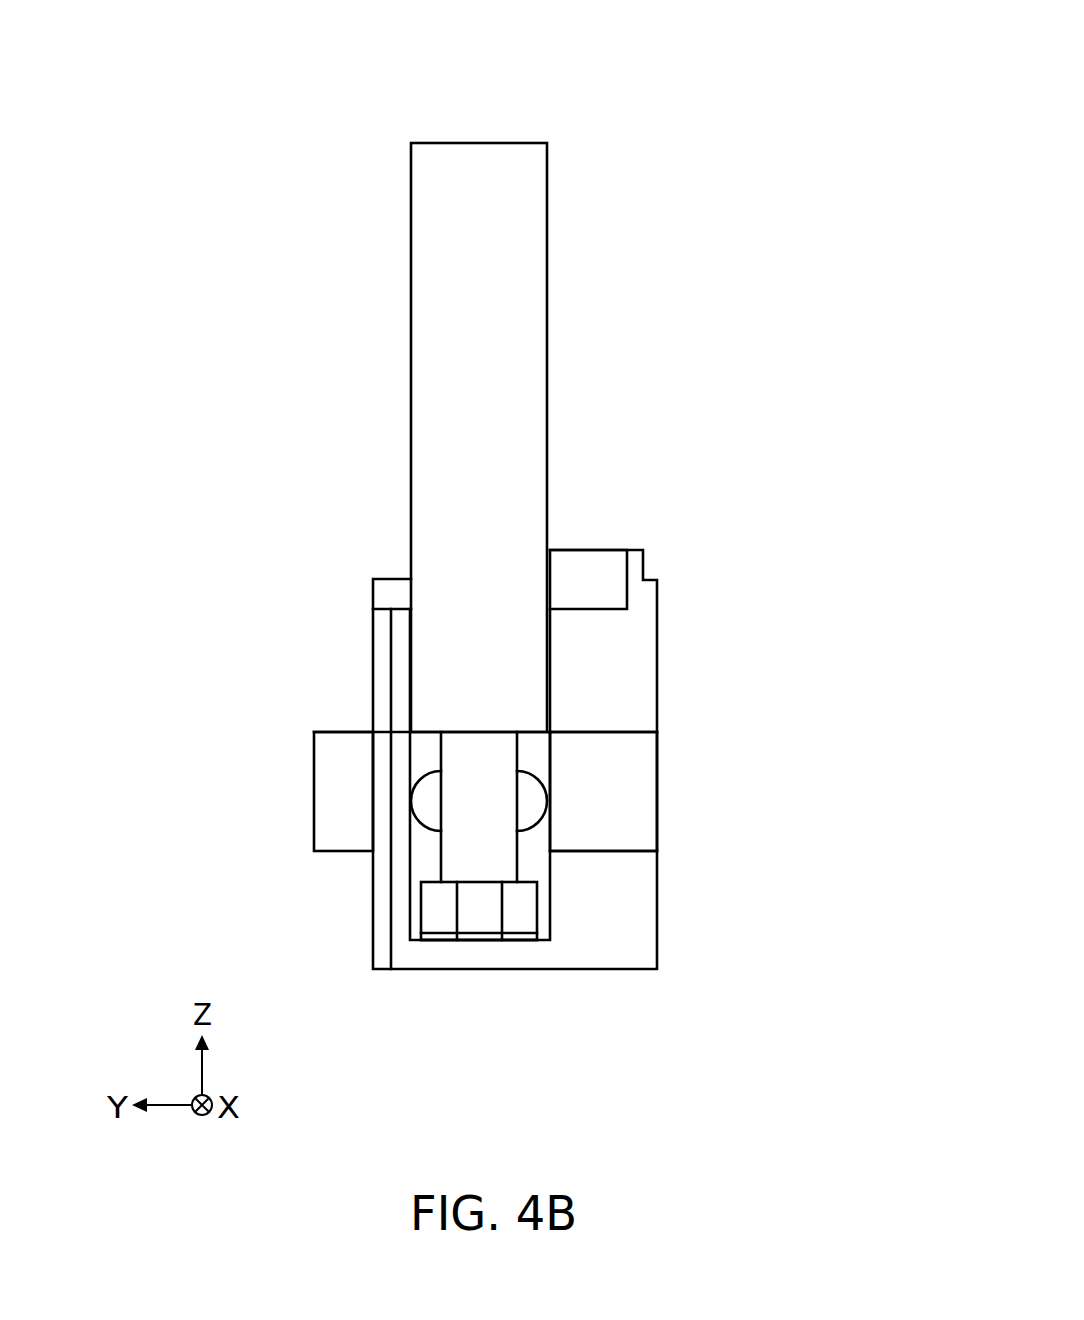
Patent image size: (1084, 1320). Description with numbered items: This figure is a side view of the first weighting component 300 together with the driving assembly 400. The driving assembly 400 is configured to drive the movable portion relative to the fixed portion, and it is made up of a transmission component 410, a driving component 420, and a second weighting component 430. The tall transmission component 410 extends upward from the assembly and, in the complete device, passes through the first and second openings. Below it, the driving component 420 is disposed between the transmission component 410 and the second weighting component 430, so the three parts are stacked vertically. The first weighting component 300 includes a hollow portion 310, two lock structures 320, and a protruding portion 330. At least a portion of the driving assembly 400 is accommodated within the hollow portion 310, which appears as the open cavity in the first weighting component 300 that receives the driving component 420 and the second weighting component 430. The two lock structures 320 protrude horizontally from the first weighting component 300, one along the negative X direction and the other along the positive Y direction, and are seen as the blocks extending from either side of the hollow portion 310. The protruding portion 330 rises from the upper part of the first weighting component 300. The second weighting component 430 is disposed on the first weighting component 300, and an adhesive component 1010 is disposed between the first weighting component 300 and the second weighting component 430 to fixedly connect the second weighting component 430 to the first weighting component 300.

The first weighting component 300 is at (675, 597).
The hollow portion 310 is at (421, 862).
The lock structures 320 is at (327, 792).
The protruding portion 330 is at (635, 563).
The driving assembly 400 is at (838, 9).
The transmission component 410 is at (532, 325).
The driving component 420 is at (491, 848).
The second weighting component 430 is at (525, 911).
The adhesive component 1010 is at (480, 935).